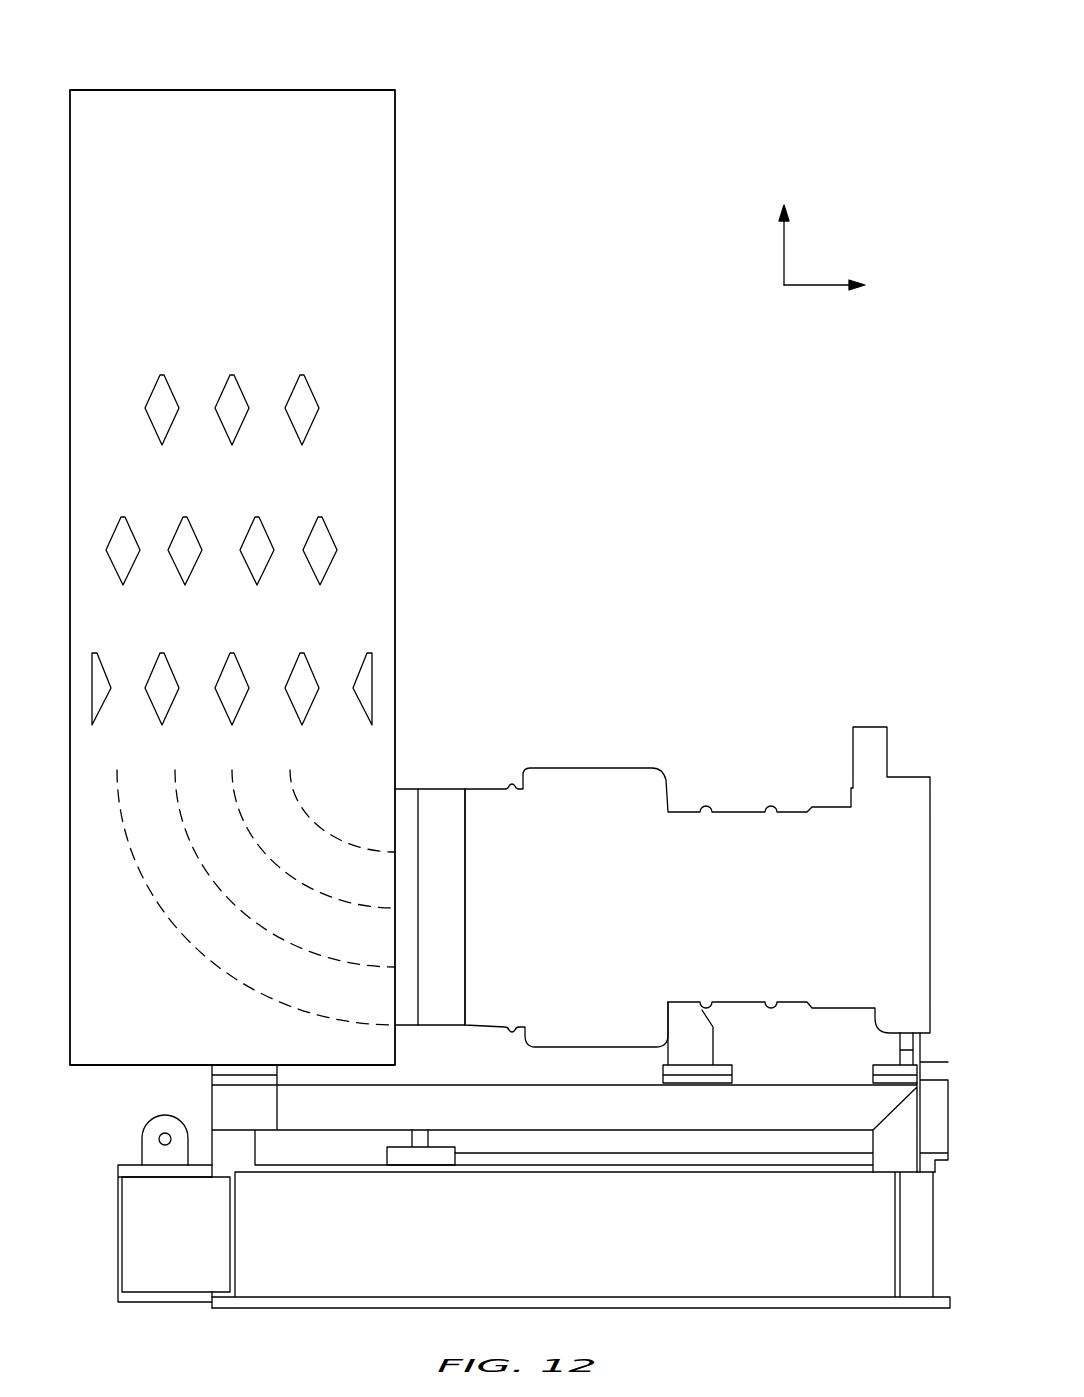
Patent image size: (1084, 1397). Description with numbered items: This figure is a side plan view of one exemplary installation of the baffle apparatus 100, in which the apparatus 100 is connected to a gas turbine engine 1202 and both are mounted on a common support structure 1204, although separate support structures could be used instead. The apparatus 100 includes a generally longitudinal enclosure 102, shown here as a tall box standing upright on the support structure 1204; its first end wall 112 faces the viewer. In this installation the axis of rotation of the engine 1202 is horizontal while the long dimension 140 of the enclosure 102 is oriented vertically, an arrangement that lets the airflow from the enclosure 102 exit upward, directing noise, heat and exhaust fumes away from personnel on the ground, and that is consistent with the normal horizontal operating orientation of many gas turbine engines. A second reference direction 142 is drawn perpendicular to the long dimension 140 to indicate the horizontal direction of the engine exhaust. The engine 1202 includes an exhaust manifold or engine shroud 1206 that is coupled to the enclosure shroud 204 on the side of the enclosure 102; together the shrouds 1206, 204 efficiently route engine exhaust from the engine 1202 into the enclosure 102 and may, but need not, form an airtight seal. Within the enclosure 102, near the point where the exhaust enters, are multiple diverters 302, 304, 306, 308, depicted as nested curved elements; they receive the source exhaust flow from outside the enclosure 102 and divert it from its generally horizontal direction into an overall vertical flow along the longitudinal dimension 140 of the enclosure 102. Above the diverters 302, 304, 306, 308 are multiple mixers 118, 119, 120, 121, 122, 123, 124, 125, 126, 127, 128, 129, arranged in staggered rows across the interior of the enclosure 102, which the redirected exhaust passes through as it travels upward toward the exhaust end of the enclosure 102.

The baffle apparatus 100 is at (524, 44).
The enclosure 102 is at (65, 82).
The first end wall 112 is at (210, 179).
The mixer 118 is at (162, 375).
The mixer 119 is at (232, 375).
The mixer 120 is at (302, 375).
The mixer 121 is at (123, 517).
The mixer 122 is at (185, 517).
The mixer 123 is at (257, 517).
The mixer 124 is at (320, 517).
The mixer 125 is at (94, 653).
The mixer 126 is at (162, 653).
The mixer 127 is at (232, 653).
The mixer 128 is at (302, 653).
The mixer 129 is at (369, 653).
The longitudinal dimension 140 is at (784, 241).
The horizontal axis direction 142 is at (817, 287).
The enclosure shroud 204 is at (403, 798).
The diverter 302 is at (291, 780).
The diverter 304 is at (233, 780).
The diverter 306 is at (176, 780).
The diverter 308 is at (118, 780).
The gas turbine engine 1202 is at (681, 919).
The support structure 1204 is at (118, 1075).
The engine shroud 1206 is at (435, 800).